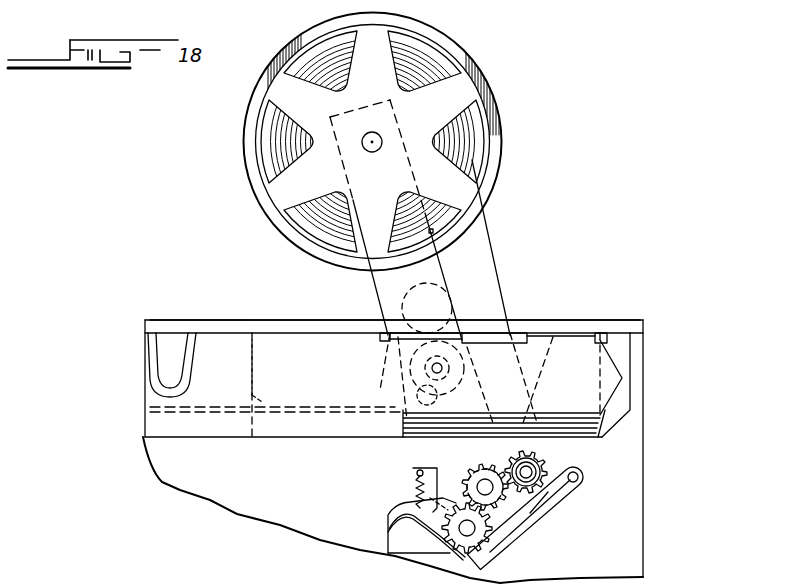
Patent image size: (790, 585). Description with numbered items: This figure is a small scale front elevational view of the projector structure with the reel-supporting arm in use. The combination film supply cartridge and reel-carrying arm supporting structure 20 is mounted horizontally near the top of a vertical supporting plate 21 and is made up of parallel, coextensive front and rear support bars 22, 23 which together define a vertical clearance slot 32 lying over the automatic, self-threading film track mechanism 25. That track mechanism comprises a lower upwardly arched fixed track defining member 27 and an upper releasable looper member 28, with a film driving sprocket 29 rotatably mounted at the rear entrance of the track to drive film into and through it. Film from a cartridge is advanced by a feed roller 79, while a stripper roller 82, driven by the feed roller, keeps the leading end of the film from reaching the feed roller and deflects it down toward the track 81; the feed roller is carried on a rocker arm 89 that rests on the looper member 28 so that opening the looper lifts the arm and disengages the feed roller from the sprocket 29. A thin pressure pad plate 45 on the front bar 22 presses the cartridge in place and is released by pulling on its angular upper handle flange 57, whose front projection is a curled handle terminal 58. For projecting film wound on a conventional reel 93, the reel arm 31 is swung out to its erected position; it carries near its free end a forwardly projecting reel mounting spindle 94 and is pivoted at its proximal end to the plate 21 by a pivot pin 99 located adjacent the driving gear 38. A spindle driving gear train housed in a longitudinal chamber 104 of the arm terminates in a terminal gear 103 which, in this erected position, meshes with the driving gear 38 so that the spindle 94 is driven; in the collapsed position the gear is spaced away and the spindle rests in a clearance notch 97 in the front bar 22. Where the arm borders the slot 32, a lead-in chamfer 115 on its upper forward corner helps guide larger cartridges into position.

The reel 93 is at (478, 85).
The reel mounting spindle 94 is at (372, 152).
The lead-in chamfer 115 is at (453, 293).
The reel arm 31 is at (383, 297).
The terminal gear 103 is at (403, 308).
The supporting structure 20 is at (311, 439).
The supporting plate 21 is at (636, 483).
The front support bar 22 is at (240, 332).
The rear support bar 23 is at (176, 345).
The clearance notch 97 is at (167, 343).
The longitudinal chamber 104 is at (232, 407).
The clearance slot 32 is at (253, 397).
The pressure pad plate 45 is at (640, 336).
The curled handle terminal 58 is at (489, 334).
The handle flange 57 is at (573, 333).
The driving gear 38 is at (460, 372).
The pivot pin 99 is at (400, 404).
The feed roller 79 is at (490, 464).
The stripper roller 82 is at (542, 465).
The film driving sprocket 29 is at (462, 545).
The film track mechanism 25 is at (500, 556).
The track 81 is at (530, 513).
The looper member 28 is at (403, 508).
The fixed track defining member 27 is at (393, 543).
The rocker arm 89 is at (440, 474).